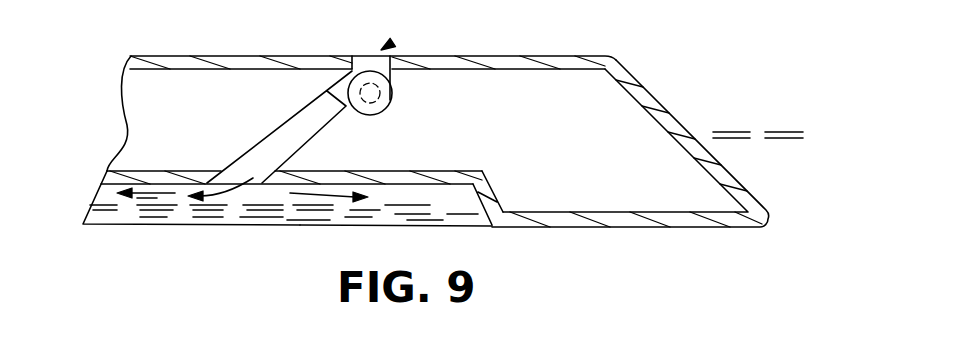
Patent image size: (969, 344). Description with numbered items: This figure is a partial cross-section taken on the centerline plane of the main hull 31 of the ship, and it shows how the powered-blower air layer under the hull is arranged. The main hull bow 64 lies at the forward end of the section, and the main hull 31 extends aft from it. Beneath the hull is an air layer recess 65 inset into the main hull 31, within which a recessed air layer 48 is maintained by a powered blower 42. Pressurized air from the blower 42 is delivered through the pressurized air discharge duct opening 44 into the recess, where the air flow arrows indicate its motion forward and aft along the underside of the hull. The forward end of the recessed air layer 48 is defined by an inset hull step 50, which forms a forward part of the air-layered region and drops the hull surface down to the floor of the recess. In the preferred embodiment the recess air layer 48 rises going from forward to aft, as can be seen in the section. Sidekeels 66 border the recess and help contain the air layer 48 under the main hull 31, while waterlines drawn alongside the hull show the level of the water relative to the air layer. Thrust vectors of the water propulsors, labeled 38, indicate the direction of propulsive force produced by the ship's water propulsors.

The main hull 31 is at (250, 55).
The water propulsor thrust vectors 38 is at (364, 58).
The powered blower 42 is at (382, 92).
The pressurized air discharge duct opening 44 is at (217, 182).
The air layer 48 is at (392, 207).
The hull step inset 50 is at (478, 205).
The main hull bow 64 is at (660, 100).
The air layer recess 65 is at (459, 207).
The sidekeels 66 is at (168, 225).